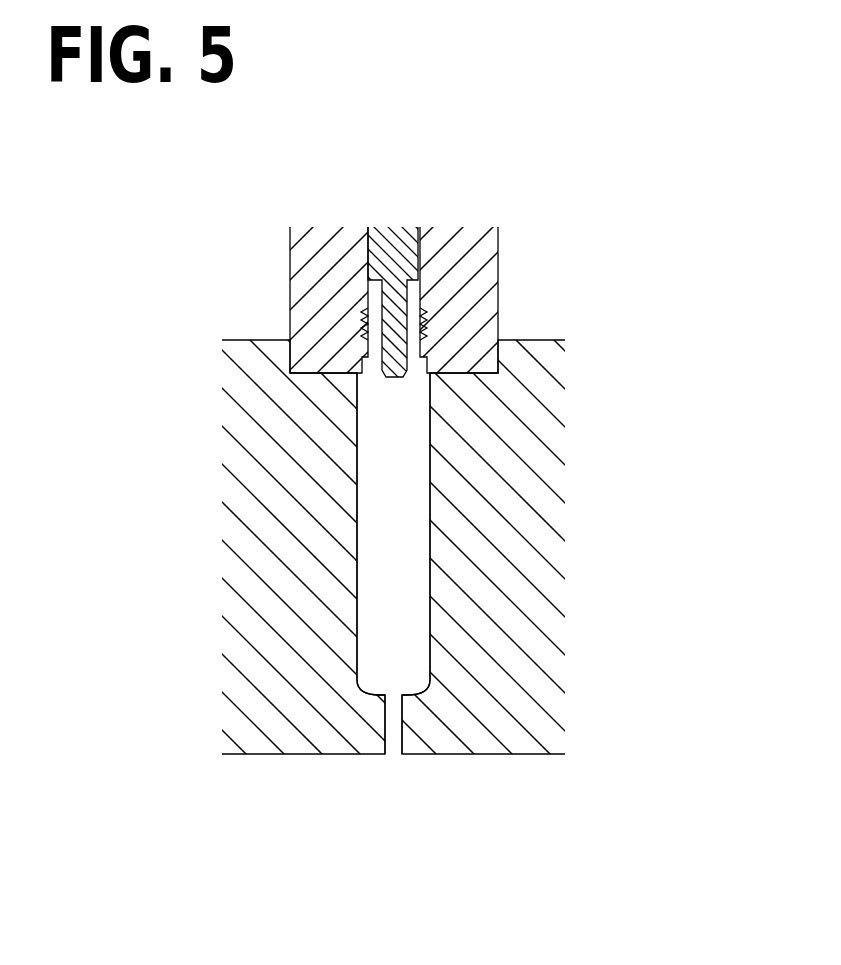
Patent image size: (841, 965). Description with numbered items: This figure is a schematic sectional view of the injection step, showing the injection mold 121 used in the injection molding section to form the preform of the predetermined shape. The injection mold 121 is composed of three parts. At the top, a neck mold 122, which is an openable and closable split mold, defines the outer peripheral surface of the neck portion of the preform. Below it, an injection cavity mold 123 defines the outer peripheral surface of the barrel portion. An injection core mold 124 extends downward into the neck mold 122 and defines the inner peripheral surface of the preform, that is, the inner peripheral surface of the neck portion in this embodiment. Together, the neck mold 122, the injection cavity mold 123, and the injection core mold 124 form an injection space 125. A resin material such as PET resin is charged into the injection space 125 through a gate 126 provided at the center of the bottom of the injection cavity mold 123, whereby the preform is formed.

The injection mold 121 is at (644, 173).
The neck mold 122 is at (487, 291).
The injection cavity mold 123 is at (518, 556).
The injection core mold 124 is at (372, 332).
The injection space 125 is at (385, 500).
The gate 126 is at (395, 732).